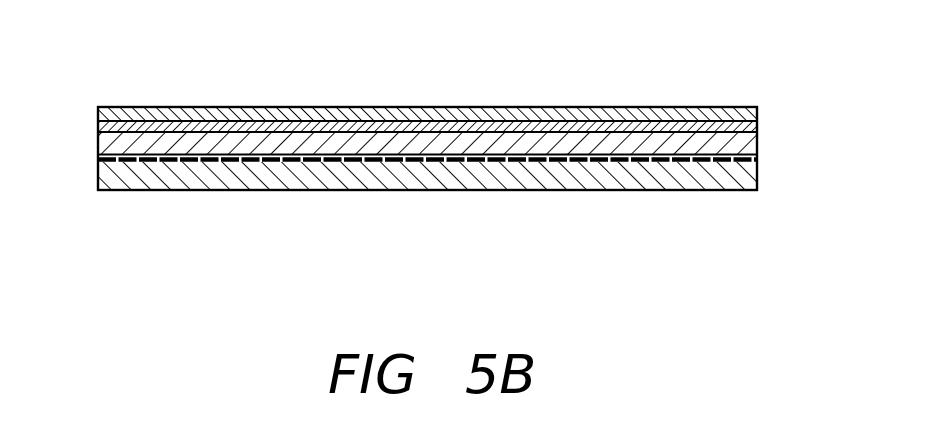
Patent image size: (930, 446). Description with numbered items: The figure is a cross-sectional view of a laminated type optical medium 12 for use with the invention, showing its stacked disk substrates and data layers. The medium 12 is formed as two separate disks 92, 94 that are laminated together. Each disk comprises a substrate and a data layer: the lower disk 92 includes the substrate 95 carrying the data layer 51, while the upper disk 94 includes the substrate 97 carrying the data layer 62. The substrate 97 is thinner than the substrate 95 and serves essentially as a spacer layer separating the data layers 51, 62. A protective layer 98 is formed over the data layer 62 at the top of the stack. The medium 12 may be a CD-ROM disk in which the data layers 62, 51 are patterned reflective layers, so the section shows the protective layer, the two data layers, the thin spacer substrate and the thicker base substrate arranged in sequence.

The laminated optical medium 12 is at (193, 279).
The protective layer 98 is at (252, 113).
The disk 94 is at (87, 119).
The data layer 62 is at (758, 134).
The disk 92 is at (88, 150).
The substrate 97 is at (200, 143).
The data layer 51 is at (758, 163).
The substrate 95 is at (133, 180).